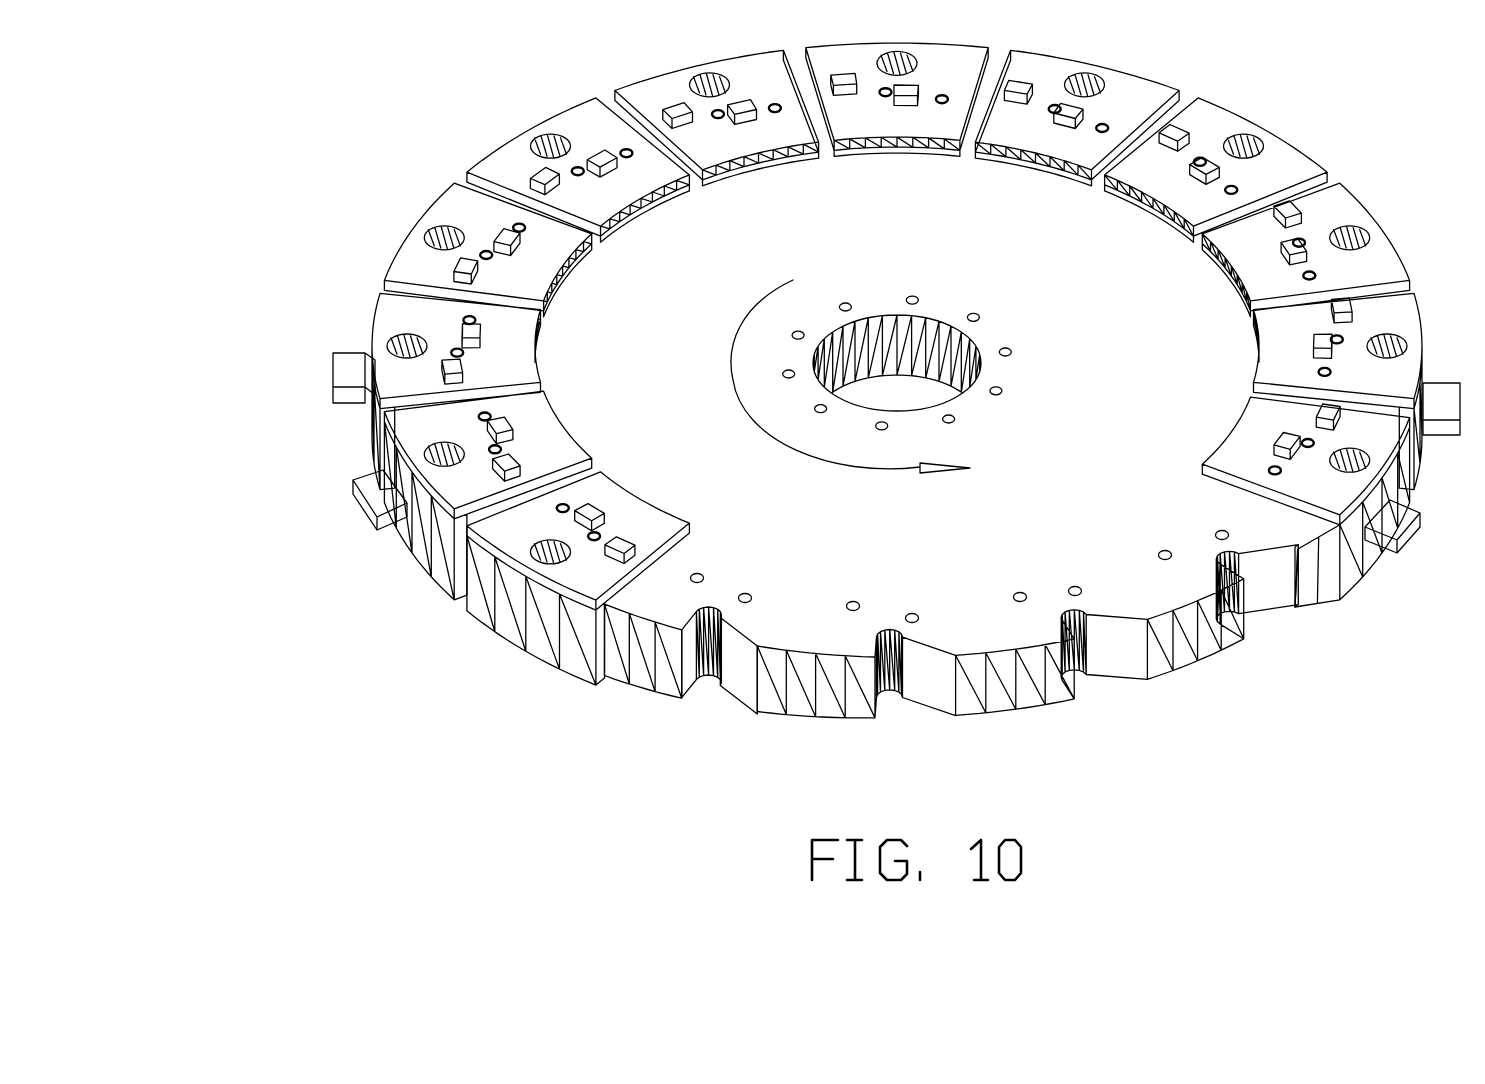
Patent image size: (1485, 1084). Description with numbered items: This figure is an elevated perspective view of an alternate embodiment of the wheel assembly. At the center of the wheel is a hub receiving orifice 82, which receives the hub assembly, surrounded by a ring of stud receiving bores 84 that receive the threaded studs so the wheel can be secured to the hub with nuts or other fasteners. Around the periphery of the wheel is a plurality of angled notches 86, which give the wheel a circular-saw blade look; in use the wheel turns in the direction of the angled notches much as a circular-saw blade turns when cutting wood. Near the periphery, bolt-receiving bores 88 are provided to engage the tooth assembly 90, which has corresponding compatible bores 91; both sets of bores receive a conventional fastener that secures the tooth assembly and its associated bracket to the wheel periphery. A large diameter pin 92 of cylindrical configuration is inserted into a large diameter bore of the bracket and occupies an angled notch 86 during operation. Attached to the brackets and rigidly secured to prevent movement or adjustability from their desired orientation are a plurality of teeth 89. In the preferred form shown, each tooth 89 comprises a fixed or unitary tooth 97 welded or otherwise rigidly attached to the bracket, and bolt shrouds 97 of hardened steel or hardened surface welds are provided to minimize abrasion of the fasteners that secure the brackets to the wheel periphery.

The hub receiving orifice 82 is at (880, 343).
The stud receiving bores 84 is at (995, 389).
The angled notches 86 is at (721, 672).
The bolt-receiving bores 88 is at (1017, 595).
The teeth 89 is at (360, 510).
The tooth assembly 90 is at (537, 667).
The compatible bores 91 is at (473, 623).
The large diameter pin 92 is at (432, 452).
The unitary tooth 97 is at (600, 503).